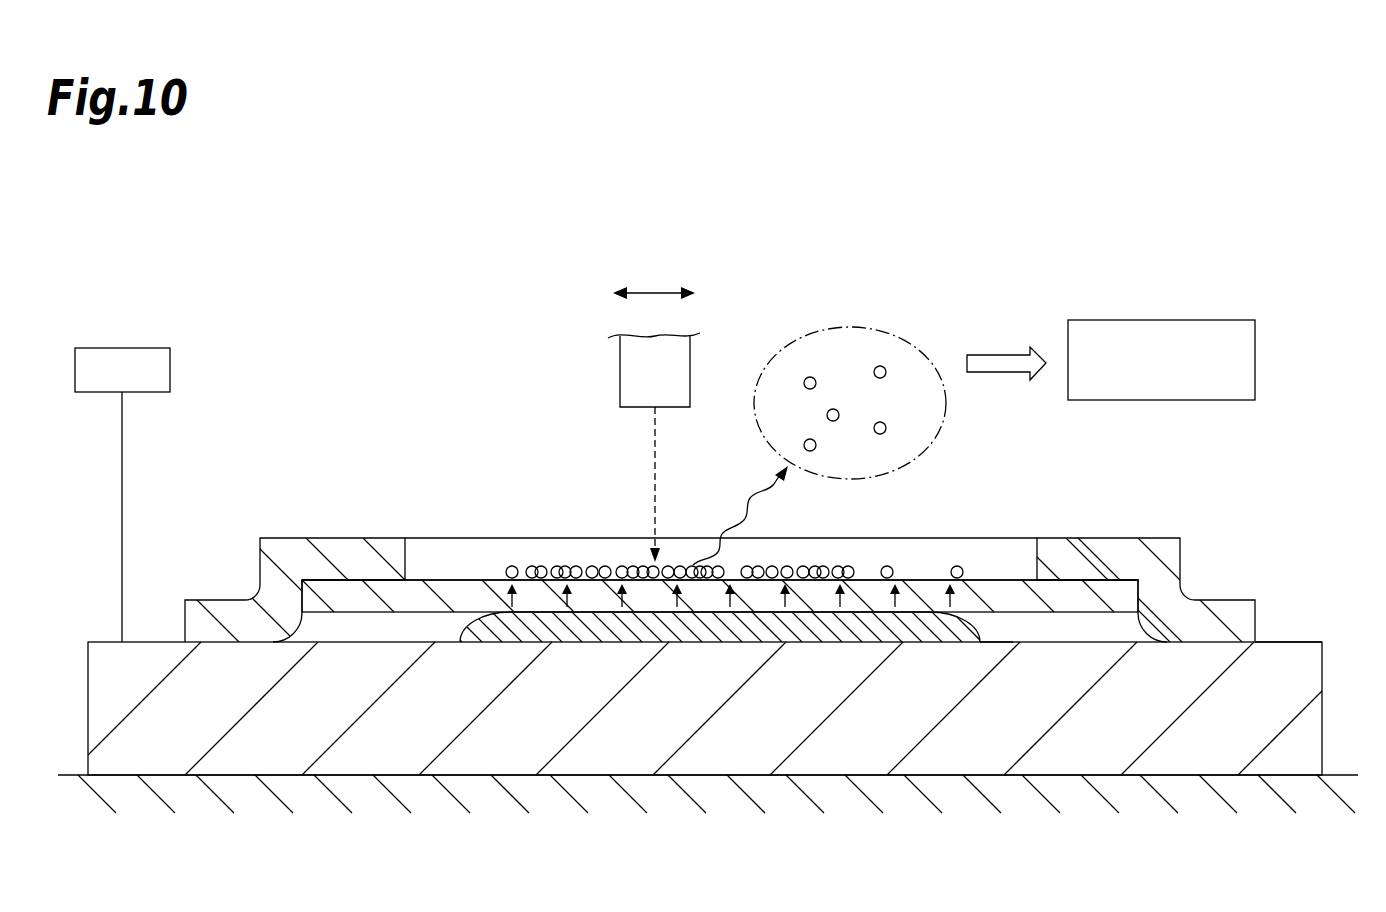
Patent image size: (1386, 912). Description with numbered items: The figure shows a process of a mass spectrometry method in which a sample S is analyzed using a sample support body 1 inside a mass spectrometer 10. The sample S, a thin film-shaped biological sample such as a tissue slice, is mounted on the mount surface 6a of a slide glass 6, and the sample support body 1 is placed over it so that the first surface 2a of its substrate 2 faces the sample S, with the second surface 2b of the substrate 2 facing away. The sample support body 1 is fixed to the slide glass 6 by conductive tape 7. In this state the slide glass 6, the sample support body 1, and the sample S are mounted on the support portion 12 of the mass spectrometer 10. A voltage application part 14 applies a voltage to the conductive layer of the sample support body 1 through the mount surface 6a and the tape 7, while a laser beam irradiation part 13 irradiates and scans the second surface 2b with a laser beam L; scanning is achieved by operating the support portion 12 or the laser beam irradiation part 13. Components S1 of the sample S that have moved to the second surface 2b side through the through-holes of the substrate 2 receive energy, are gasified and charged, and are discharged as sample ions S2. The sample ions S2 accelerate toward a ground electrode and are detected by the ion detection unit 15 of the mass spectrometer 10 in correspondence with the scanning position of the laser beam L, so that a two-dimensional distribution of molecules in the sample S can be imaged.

The sample support body 1 is at (1096, 576).
The substrate 2 is at (1120, 597).
The first surface 2a is at (452, 614).
The second surface 2b is at (473, 580).
The slide glass 6 is at (1310, 722).
The mount surface 6a is at (1277, 642).
The conductive tape 7 is at (218, 600).
The mass spectrometer 10 is at (1237, 236).
The support portion 12 is at (70, 775).
The laser beam irradiation part 13 is at (620, 373).
The voltage application part 14 is at (172, 363).
The ion detection unit 15 is at (1257, 362).
The laser beam L is at (653, 447).
The sample S is at (1013, 643).
The components of the sample S1 is at (842, 566).
The sample ions S2 is at (880, 365).